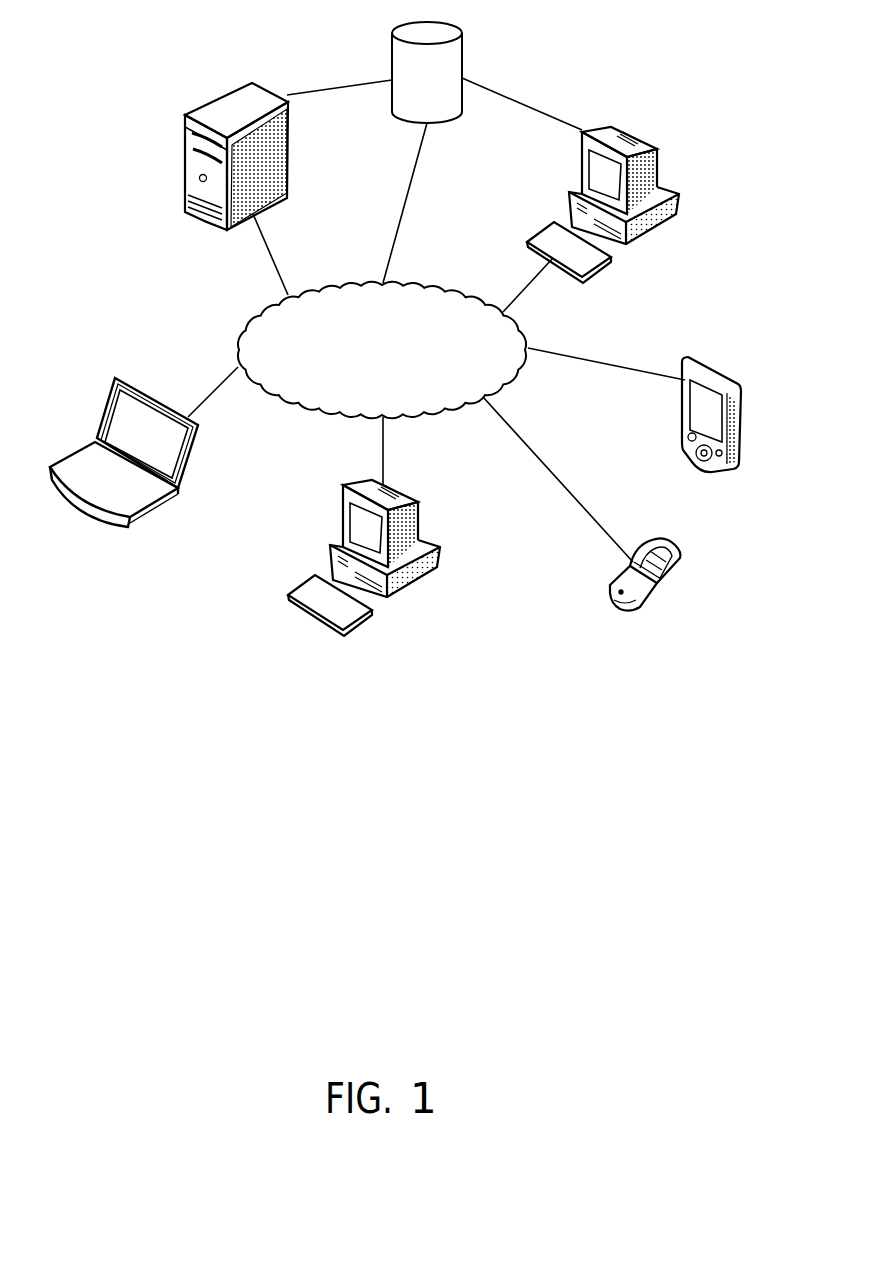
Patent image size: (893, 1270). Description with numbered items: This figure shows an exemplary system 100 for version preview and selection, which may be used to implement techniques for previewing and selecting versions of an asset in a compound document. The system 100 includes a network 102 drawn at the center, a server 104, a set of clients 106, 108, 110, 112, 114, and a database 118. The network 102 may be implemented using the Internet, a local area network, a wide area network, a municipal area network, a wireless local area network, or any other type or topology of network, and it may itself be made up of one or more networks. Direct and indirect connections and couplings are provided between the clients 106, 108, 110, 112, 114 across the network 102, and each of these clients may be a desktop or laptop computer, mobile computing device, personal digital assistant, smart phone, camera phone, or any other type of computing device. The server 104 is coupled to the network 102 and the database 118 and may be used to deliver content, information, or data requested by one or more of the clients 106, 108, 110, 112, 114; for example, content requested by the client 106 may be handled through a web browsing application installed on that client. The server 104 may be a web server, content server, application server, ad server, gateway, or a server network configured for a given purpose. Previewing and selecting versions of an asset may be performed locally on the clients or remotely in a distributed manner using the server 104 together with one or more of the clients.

The system 100 is at (98, 835).
The network 102 is at (402, 390).
The server 104 is at (205, 110).
The client 106 is at (650, 148).
The client 108 is at (440, 553).
The client 110 is at (183, 474).
The client 112 is at (687, 558).
The client 114 is at (743, 421).
The database 118 is at (445, 87).